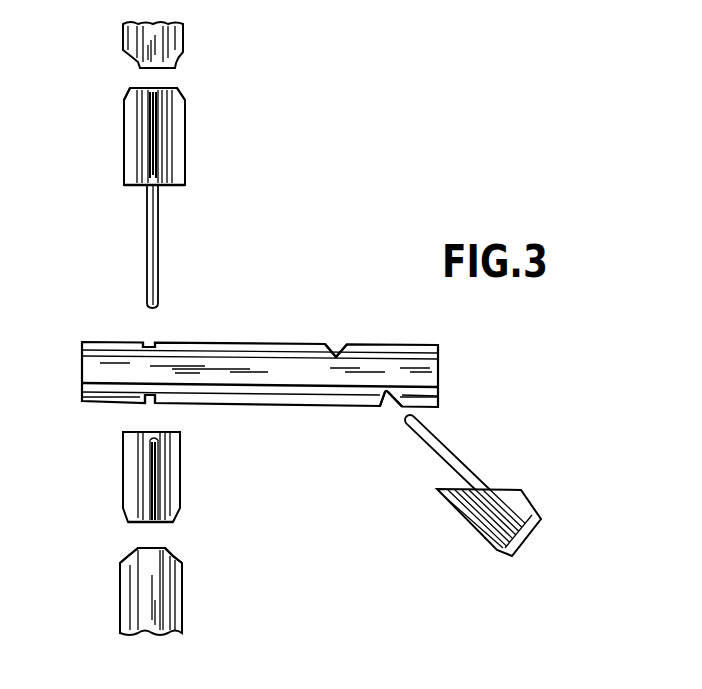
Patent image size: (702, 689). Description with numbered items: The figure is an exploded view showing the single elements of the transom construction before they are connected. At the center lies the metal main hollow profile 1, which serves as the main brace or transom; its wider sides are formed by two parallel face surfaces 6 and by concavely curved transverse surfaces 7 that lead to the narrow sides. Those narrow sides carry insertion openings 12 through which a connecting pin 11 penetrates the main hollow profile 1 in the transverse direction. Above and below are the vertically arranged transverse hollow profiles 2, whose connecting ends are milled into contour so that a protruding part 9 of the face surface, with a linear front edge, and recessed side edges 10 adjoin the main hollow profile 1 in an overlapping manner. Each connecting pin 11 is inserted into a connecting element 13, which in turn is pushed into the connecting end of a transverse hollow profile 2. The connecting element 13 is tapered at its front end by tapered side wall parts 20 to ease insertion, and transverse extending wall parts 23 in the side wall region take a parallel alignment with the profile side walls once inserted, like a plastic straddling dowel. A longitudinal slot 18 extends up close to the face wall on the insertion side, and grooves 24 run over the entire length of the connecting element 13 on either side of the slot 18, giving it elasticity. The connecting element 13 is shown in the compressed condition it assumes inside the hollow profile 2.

The main hollow profile 1 is at (442, 372).
The transverse hollow profile 2 is at (190, 43).
The face surface 6 is at (250, 370).
The transverse surface 7 is at (293, 390).
The protruding part 9 is at (150, 553).
The recessed side edge 10 is at (170, 553).
The connecting pin 11 is at (157, 240).
The insertion opening 12 is at (148, 338).
The connecting element 13 is at (193, 145).
The longitudinal slot 18 is at (153, 120).
The tapered side wall part 20 is at (127, 98).
The transverse extending wall part 23 is at (128, 138).
The groove 24 is at (153, 168).